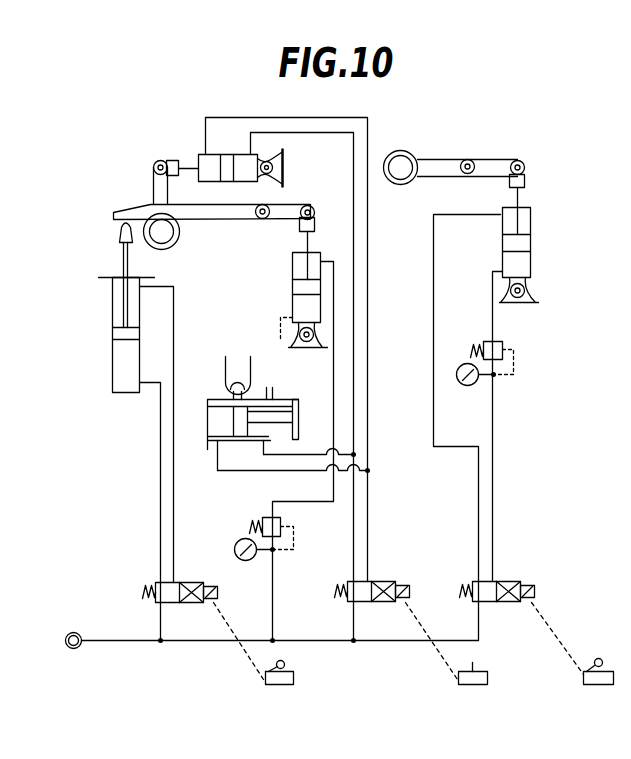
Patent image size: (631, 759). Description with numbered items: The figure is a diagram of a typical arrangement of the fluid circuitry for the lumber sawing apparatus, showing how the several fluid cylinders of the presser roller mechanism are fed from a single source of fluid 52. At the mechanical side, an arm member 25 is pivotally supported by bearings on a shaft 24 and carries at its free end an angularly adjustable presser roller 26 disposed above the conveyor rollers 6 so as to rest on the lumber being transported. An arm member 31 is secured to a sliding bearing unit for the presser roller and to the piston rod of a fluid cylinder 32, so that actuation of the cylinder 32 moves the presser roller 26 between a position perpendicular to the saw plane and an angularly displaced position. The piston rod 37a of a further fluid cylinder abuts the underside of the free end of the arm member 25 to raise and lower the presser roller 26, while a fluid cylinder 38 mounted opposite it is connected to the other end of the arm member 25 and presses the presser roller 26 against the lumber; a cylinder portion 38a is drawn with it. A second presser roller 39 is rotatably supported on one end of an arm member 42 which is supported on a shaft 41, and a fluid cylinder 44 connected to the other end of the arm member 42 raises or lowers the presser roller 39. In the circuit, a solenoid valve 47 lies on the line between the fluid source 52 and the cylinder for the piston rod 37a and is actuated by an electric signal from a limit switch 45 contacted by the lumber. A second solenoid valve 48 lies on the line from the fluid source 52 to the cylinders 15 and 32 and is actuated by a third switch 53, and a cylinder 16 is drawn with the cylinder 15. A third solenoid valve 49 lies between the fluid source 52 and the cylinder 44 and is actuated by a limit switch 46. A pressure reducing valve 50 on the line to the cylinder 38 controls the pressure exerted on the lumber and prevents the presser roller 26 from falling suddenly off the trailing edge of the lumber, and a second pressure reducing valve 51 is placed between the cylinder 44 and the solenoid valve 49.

The conveyor rollers 6 is at (226, 372).
The cylinder 15 is at (236, 440).
The cylinder 16 is at (278, 398).
The shaft 24 is at (262, 220).
The arm member 25 is at (211, 220).
The presser roller 26 is at (174, 248).
The arm member 31 is at (151, 192).
The fluid cylinder 32 is at (228, 151).
The piston rod 37a is at (123, 259).
The fluid cylinder 38 is at (292, 259).
The cylinder 38a is at (112, 312).
The presser roller 39 is at (408, 150).
The shaft 41 is at (477, 161).
The arm member 42 is at (442, 159).
The fluid cylinder 44 is at (531, 228).
The limit switch 45 is at (293, 681).
The limit switch 46 is at (588, 671).
The solenoid valve 47 is at (190, 582).
The second solenoid valve 48 is at (383, 581).
The third solenoid valve 49 is at (516, 581).
The pressure reducing valve 50 is at (262, 520).
The second pressure reducing valve 51 is at (503, 343).
The source of fluid 52 is at (72, 631).
The third switch 53 is at (487, 677).